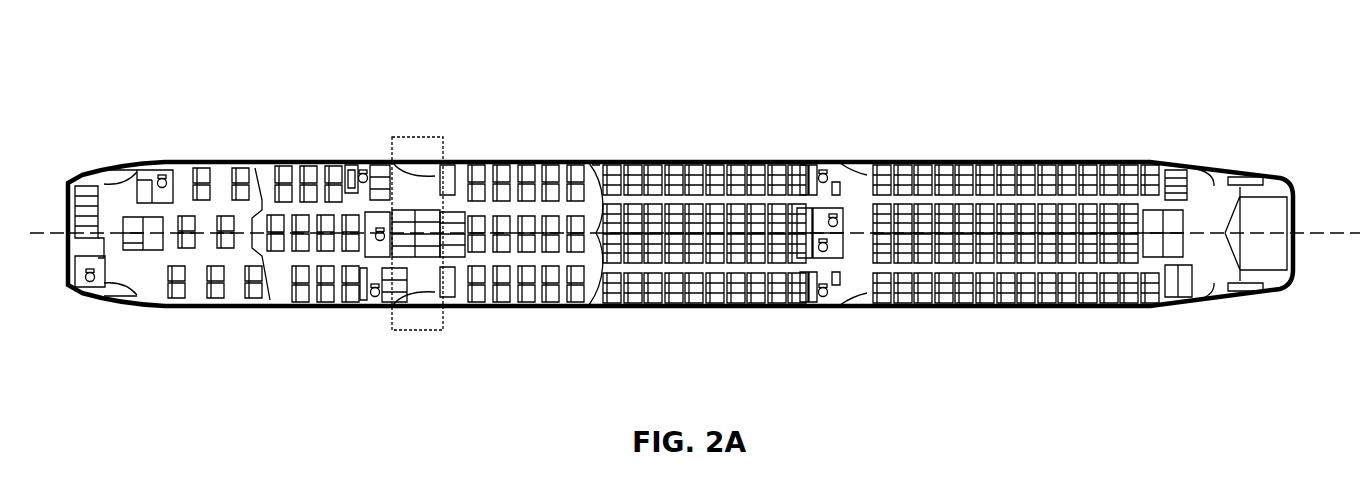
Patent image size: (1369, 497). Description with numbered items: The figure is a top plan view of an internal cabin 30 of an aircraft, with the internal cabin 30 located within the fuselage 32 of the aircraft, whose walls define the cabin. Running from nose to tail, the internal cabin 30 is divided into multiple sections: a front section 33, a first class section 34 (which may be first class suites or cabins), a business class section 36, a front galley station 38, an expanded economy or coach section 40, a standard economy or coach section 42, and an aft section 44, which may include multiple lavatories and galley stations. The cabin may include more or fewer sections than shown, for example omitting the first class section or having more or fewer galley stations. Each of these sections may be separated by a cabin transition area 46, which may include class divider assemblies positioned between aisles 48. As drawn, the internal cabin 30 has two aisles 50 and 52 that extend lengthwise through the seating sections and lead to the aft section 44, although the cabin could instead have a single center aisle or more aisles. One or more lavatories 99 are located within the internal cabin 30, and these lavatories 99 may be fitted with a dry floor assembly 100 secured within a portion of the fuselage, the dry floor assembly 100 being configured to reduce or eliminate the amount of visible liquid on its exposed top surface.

The internal cabin 30 is at (207, 66).
The fuselage 32 is at (540, 122).
The front section 33 is at (127, 321).
The first class section 34 is at (224, 309).
The business class section 36 is at (297, 160).
The front galley station 38 is at (418, 322).
The expanded economy or coach section 40 is at (518, 308).
The standard economy or coach section 42 is at (652, 162).
The aft section 44 is at (1214, 187).
The cabin transition area 46 is at (143, 160).
The aisles 48 is at (406, 201).
The aisle 50 is at (1008, 192).
The aisle 52 is at (1027, 270).
The lavatories 99 is at (374, 232).
The dry floor assembly 100 is at (820, 162).